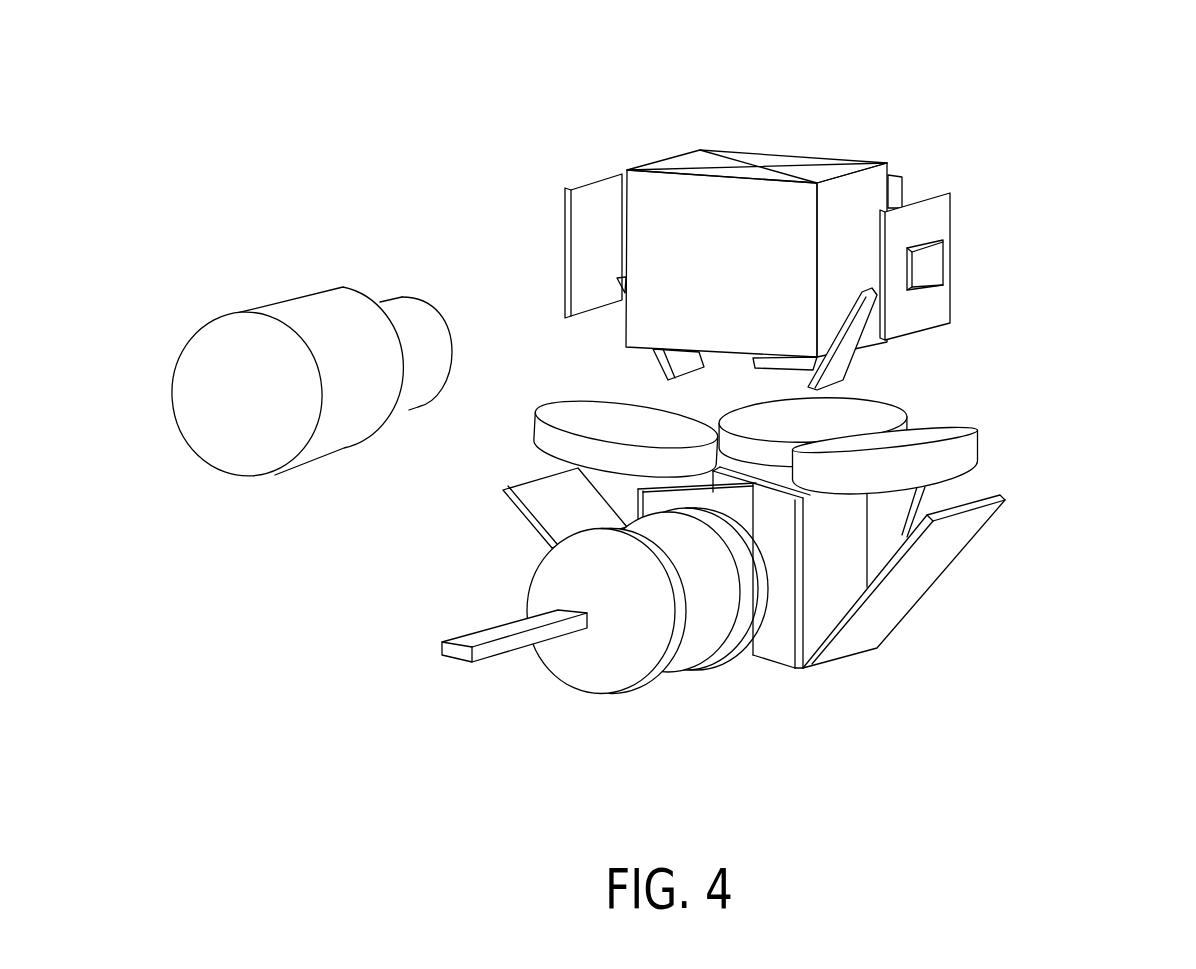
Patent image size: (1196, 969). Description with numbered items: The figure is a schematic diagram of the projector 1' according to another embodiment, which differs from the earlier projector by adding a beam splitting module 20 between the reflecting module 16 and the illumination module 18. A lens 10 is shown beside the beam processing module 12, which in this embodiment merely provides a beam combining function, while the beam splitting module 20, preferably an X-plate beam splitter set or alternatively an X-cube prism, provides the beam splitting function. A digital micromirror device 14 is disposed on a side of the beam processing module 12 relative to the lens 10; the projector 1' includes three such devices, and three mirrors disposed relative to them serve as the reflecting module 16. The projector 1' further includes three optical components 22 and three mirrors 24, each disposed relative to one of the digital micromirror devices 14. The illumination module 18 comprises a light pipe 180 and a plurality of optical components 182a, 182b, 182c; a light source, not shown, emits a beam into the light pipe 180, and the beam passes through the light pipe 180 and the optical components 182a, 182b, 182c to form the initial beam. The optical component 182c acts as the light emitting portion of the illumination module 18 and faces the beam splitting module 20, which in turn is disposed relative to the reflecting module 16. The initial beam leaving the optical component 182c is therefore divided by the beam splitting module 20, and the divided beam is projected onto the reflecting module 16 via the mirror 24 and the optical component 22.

The projector 1' is at (665, 418).
The lens 10 is at (272, 306).
The beam processing module 12 is at (733, 150).
The digital micromirror device 14 is at (952, 210).
The reflecting module 16 is at (853, 367).
The illumination module 18 is at (611, 639).
The light pipe 180 is at (500, 622).
The optical component 182a is at (560, 682).
The optical component 182b is at (687, 662).
The optical component 182c is at (762, 632).
The beam splitting module 20 is at (803, 582).
The optical component 22 is at (978, 447).
The mirror 24 is at (933, 585).